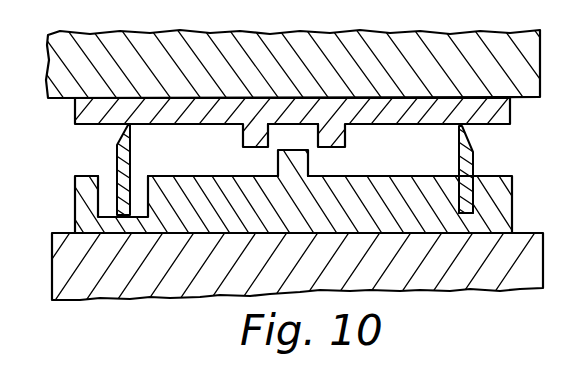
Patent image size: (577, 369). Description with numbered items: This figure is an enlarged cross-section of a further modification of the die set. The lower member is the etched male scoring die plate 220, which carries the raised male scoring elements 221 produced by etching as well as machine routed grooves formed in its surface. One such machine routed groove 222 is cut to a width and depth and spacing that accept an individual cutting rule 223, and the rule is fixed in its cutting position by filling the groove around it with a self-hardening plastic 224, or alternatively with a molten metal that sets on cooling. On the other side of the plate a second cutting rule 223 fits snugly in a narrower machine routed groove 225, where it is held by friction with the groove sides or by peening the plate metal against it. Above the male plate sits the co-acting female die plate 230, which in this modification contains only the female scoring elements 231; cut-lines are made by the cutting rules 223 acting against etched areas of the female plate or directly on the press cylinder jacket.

The etched male scoring die plate 220 is at (512, 196).
The raised male scoring element 221 is at (308, 152).
The machine routed groove 222 is at (96, 186).
The cutting rule 223 is at (120, 133).
The self-hardening plastic 224 is at (140, 179).
The machine routed groove 225 is at (457, 179).
The female die plate 230 is at (511, 108).
The female scoring element 231 is at (310, 141).